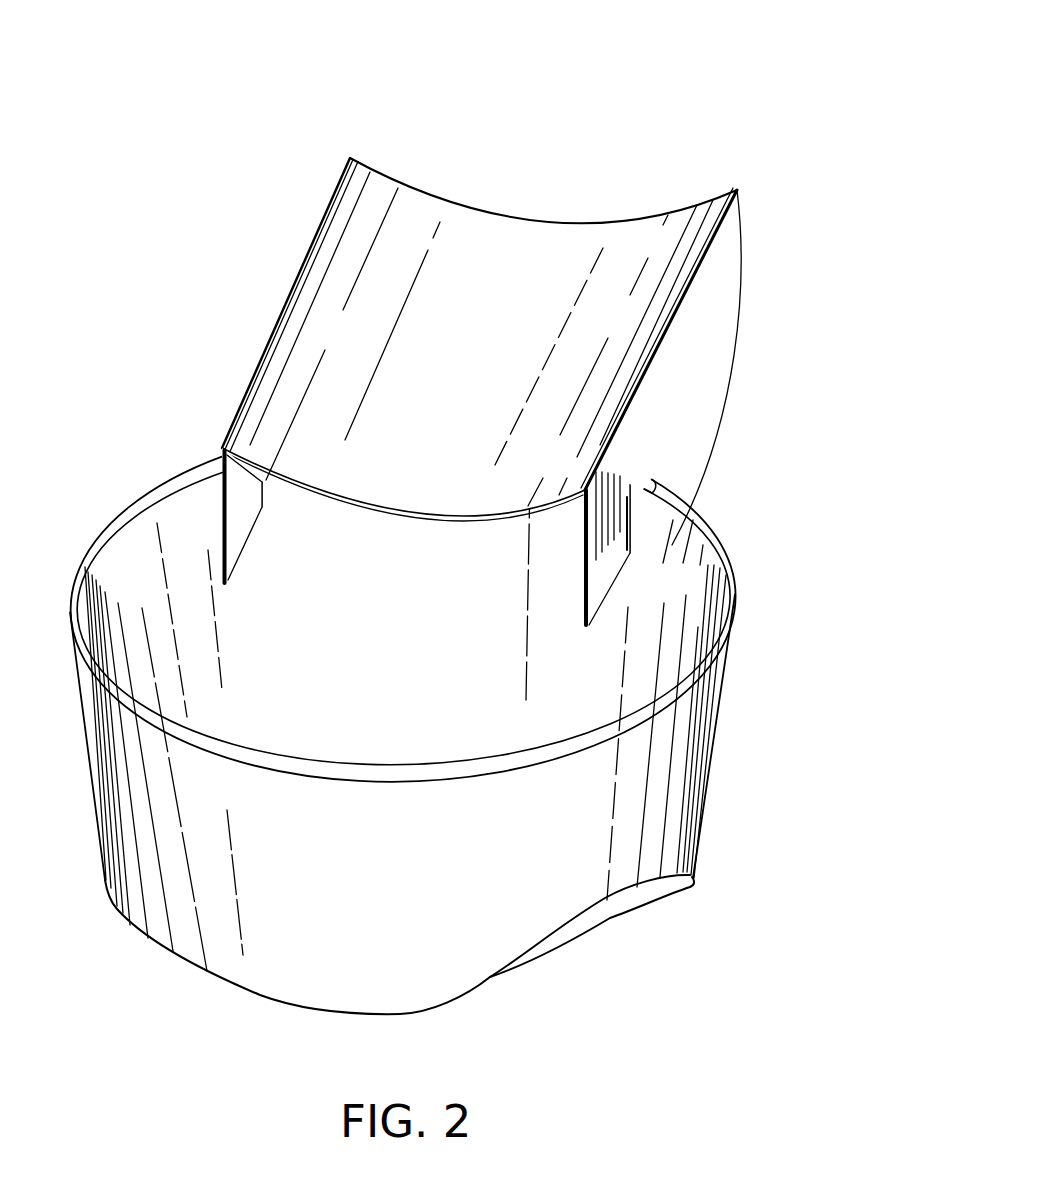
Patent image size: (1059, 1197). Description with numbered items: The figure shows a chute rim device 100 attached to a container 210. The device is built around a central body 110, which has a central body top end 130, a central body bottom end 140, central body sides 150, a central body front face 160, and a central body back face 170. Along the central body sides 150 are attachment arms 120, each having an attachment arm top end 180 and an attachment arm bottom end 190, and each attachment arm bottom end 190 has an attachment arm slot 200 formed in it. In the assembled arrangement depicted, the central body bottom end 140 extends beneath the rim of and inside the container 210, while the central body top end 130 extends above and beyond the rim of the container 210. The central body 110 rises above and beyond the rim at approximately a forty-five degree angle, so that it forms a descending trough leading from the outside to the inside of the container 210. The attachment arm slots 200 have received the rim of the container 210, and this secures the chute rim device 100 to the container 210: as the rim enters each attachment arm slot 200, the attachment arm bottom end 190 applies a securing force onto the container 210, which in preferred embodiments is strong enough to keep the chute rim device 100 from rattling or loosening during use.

The chute rim device 100 is at (700, 106).
The central body 110 is at (487, 283).
The attachment arms 120 is at (713, 429).
The central body top end 130 is at (688, 253).
The central body bottom end 140 is at (568, 479).
The central body sides 150 is at (357, 343).
The central body front face 160 is at (345, 235).
The central body back face 170 is at (393, 122).
The attachment arm top end 180 is at (732, 326).
The attachment arm bottom end 190 is at (200, 527).
The attachment arm slot 200 is at (276, 506).
The container 210 is at (407, 684).